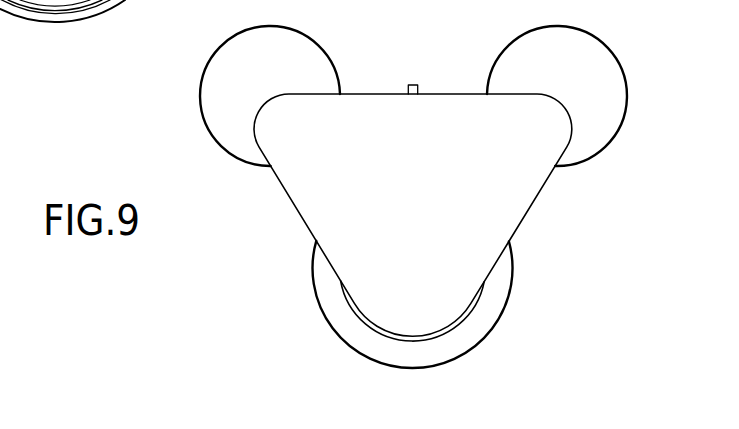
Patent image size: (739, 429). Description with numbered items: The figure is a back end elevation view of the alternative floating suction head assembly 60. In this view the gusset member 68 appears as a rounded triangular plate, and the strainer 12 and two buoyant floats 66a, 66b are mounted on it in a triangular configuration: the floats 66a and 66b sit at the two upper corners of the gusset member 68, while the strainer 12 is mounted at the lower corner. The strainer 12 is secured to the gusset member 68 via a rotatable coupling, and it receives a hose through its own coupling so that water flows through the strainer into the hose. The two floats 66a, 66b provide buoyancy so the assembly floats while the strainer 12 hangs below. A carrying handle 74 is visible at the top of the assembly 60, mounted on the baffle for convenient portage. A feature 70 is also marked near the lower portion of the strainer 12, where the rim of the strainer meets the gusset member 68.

The floating suction head assembly 60 is at (268, 205).
The buoyant float 66a is at (582, 74).
The buoyant float 66b is at (290, 67).
The gusset member 68 is at (430, 181).
The groove 70 is at (367, 325).
The carrying handle 74 is at (418, 86).
The strainer 12 is at (317, 290).